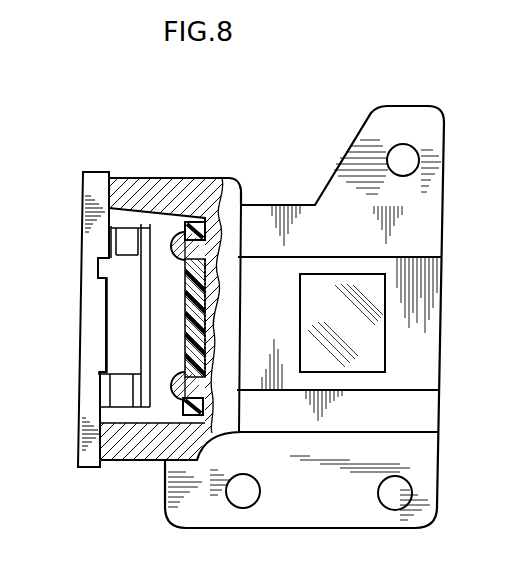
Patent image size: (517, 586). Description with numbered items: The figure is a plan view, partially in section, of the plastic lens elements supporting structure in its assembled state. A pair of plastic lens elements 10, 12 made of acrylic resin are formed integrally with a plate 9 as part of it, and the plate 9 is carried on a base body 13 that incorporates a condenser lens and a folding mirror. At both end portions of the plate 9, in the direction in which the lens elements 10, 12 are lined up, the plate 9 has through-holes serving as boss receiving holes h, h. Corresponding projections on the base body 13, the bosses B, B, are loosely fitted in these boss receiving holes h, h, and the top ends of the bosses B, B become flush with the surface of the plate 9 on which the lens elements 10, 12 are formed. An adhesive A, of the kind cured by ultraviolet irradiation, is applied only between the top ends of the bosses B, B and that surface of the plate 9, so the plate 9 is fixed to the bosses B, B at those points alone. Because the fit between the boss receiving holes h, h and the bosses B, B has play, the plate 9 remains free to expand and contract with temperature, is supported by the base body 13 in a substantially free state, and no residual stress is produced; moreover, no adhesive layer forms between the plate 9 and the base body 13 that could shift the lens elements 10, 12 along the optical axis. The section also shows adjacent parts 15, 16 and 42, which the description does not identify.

The plate 9 is at (133, 443).
The plastic lens element 10 is at (185, 312).
The plastic lens element 12 is at (185, 334).
The base body 13 is at (323, 532).
The sleeve member 15 is at (150, 230).
The end plate 16 is at (81, 422).
The insert 42 is at (100, 308).
The adhesive A is at (180, 240).
The boss B is at (200, 247).
The boss receiving hole h is at (192, 223).